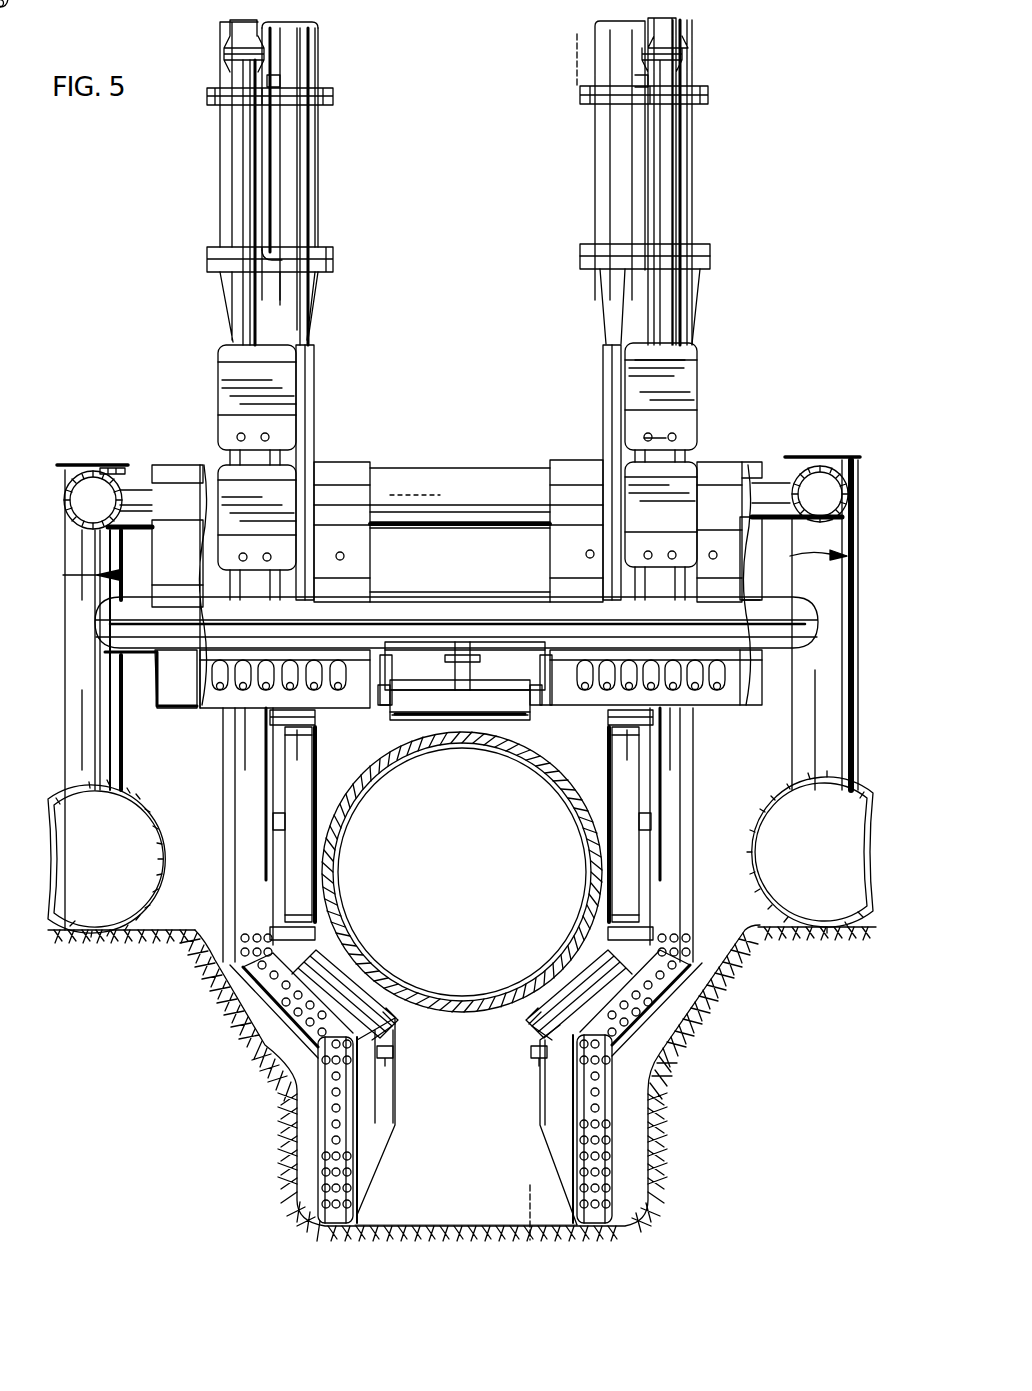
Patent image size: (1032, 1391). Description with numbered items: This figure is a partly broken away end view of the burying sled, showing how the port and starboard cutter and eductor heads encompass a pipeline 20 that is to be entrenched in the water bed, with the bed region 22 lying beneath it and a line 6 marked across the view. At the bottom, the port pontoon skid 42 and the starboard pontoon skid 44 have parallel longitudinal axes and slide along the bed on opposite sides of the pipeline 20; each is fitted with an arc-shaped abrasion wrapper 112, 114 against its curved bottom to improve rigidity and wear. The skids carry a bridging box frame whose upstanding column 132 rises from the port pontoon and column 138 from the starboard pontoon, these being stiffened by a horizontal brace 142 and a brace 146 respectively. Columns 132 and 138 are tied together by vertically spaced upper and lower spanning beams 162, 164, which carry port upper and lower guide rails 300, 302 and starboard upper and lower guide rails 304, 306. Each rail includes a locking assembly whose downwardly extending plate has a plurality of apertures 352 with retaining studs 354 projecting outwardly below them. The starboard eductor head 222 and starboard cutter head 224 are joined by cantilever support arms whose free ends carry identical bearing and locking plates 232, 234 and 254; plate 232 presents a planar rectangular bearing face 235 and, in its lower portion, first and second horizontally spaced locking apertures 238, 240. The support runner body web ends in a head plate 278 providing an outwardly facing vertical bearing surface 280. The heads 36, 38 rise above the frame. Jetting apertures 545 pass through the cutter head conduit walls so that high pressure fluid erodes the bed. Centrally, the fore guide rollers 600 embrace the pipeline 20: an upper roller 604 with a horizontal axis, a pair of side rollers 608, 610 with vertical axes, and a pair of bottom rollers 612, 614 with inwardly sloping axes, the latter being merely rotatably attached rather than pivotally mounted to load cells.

The section line 6- 6 is at (577, 34).
The pipeline 20 is at (362, 949).
The trench 22 is at (748, 1109).
The right hydraulic cylinder assembly 36 is at (732, 204).
The left hydraulic cylinder assembly 38 is at (180, 208).
The port pontoon skid 42 is at (760, 814).
The starboard pontoon skid 44 is at (158, 834).
The abrasion wrapper 112 is at (760, 912).
The abrasion wrapper 114 is at (153, 912).
The column 132 is at (850, 460).
The column 138 is at (83, 464).
The horizontal brace 142 is at (810, 522).
The brace 146 is at (130, 468).
The upper spanning beam 162 is at (478, 462).
The lower spanning beam 164 is at (452, 587).
The starboard eductor head 222 is at (318, 348).
The starboard cutter head 224 is at (230, 338).
The bearing and locking plate 232 is at (688, 352).
The bearing and locking plate 234 is at (696, 466).
The bearing face 235 is at (670, 424).
The first locking aperture 238 is at (634, 436).
The second locking aperture 240 is at (676, 437).
The bearing and locking plate 254 is at (234, 482).
The head plate 278 is at (686, 391).
The outwardly facing vertical bearing surface 280 is at (664, 387).
The port upper guide rail 300 is at (564, 462).
The port lower guide rail 302 is at (756, 708).
The starboard upper guide rail 304 is at (334, 467).
The starboard lower guide rail 306 is at (218, 712).
The locking apertures 352 is at (344, 555).
The retaining studs 354 is at (582, 701).
The jetting apertures 545 is at (317, 1105).
The fore guide rollers 600 is at (482, 1064).
The upper roller 604 is at (390, 730).
The side roller 608 is at (315, 772).
The side roller 610 is at (606, 742).
The port inclined supporting roller assembly 612 is at (560, 970).
The starboard inclined supporting roller assembly 614 is at (378, 968).